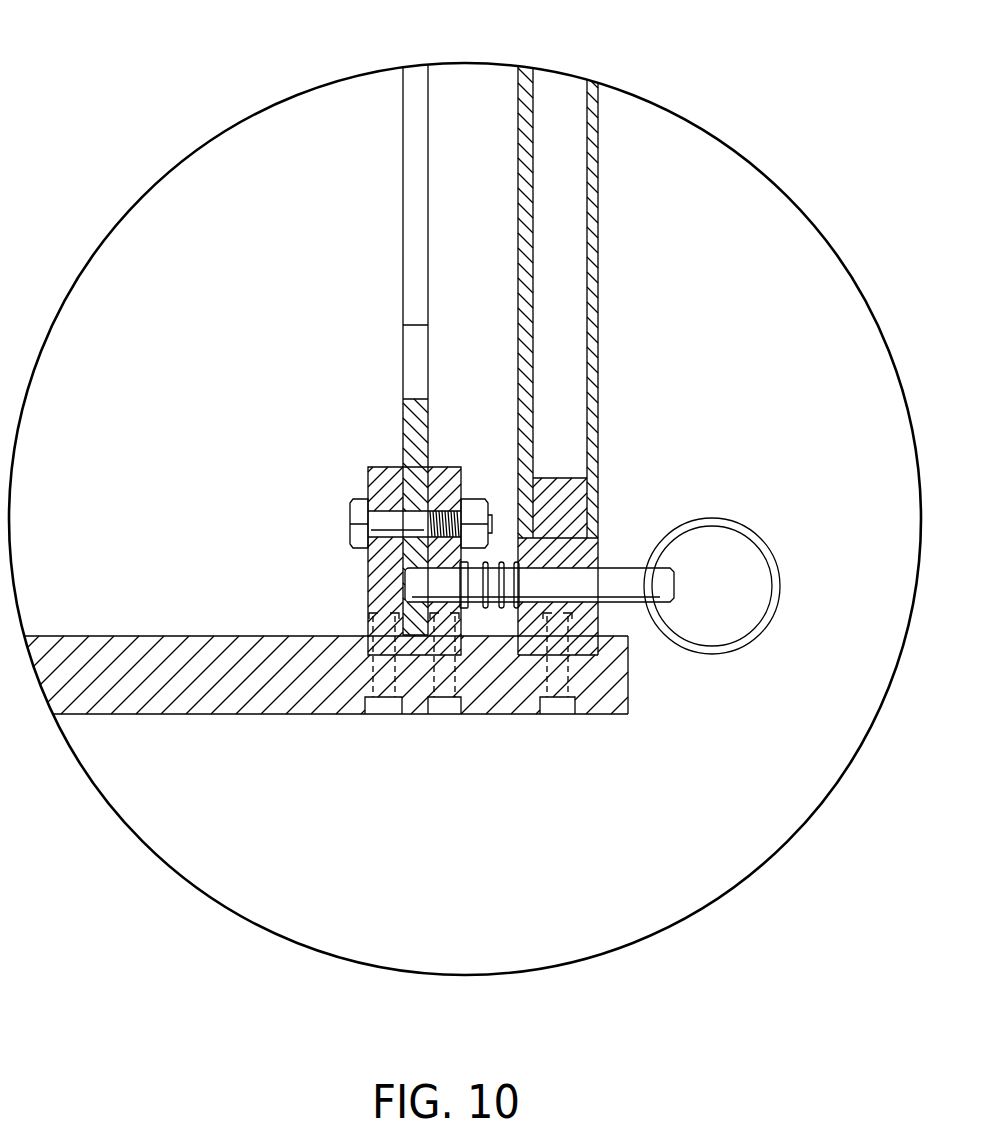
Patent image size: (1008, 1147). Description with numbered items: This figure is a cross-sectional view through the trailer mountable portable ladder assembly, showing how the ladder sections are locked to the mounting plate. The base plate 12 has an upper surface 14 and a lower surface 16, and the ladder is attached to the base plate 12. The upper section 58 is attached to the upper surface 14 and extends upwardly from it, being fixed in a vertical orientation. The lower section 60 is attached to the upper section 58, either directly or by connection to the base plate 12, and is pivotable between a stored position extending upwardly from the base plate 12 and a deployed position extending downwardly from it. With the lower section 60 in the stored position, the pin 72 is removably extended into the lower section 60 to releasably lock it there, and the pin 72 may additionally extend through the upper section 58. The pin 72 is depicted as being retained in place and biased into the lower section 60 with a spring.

The base plate 12 is at (622, 680).
The upper surface 14 is at (188, 636).
The lower surface 16 is at (215, 714).
The upper section 58 is at (625, 173).
The lower section 60 is at (368, 173).
The pin 72 is at (623, 576).